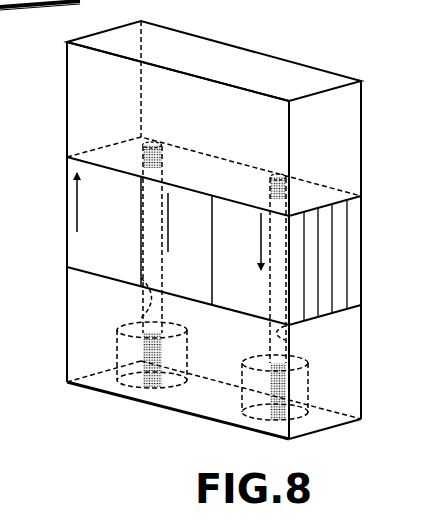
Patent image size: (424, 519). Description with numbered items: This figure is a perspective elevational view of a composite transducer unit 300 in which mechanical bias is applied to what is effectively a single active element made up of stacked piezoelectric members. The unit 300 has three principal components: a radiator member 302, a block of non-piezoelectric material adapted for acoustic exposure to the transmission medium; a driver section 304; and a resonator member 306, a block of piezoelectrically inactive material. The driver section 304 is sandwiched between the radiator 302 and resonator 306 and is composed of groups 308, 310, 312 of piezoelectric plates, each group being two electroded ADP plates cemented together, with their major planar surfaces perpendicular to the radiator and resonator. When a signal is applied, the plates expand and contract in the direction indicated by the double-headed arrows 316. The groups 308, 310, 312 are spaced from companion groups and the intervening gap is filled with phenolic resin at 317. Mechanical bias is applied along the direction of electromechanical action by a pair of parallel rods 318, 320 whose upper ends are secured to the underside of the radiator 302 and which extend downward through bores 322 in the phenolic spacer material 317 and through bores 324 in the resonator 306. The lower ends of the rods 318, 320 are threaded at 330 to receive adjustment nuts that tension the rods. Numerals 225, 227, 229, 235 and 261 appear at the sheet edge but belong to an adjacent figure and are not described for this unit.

The component of adjacent figure 225 is at (0, 250).
The component of adjacent figure 227 is at (0, 63).
The component of adjacent figure 229 is at (13, 116).
The component of adjacent figure 235 is at (0, 98).
The component of adjacent figure 261 is at (14, 175).
The composite transducer unit 300 is at (269, 33).
The radiator member 302 is at (64, 124).
The driver section 304 is at (64, 186).
The resonator member 306 is at (63, 363).
The group of piezoelectric elements 308 is at (120, 263).
The group of piezoelectric elements 310 is at (201, 275).
The group of piezoelectric elements 312 is at (255, 286).
The double-headed arrows 316 is at (78, 207).
The phenolic spacer material 317 is at (327, 272).
The rod 318 is at (162, 290).
The rod 320 is at (286, 327).
The bores 322 is at (141, 287).
The bores 324 is at (140, 318).
The threaded lower ends of rods 330 is at (147, 390).